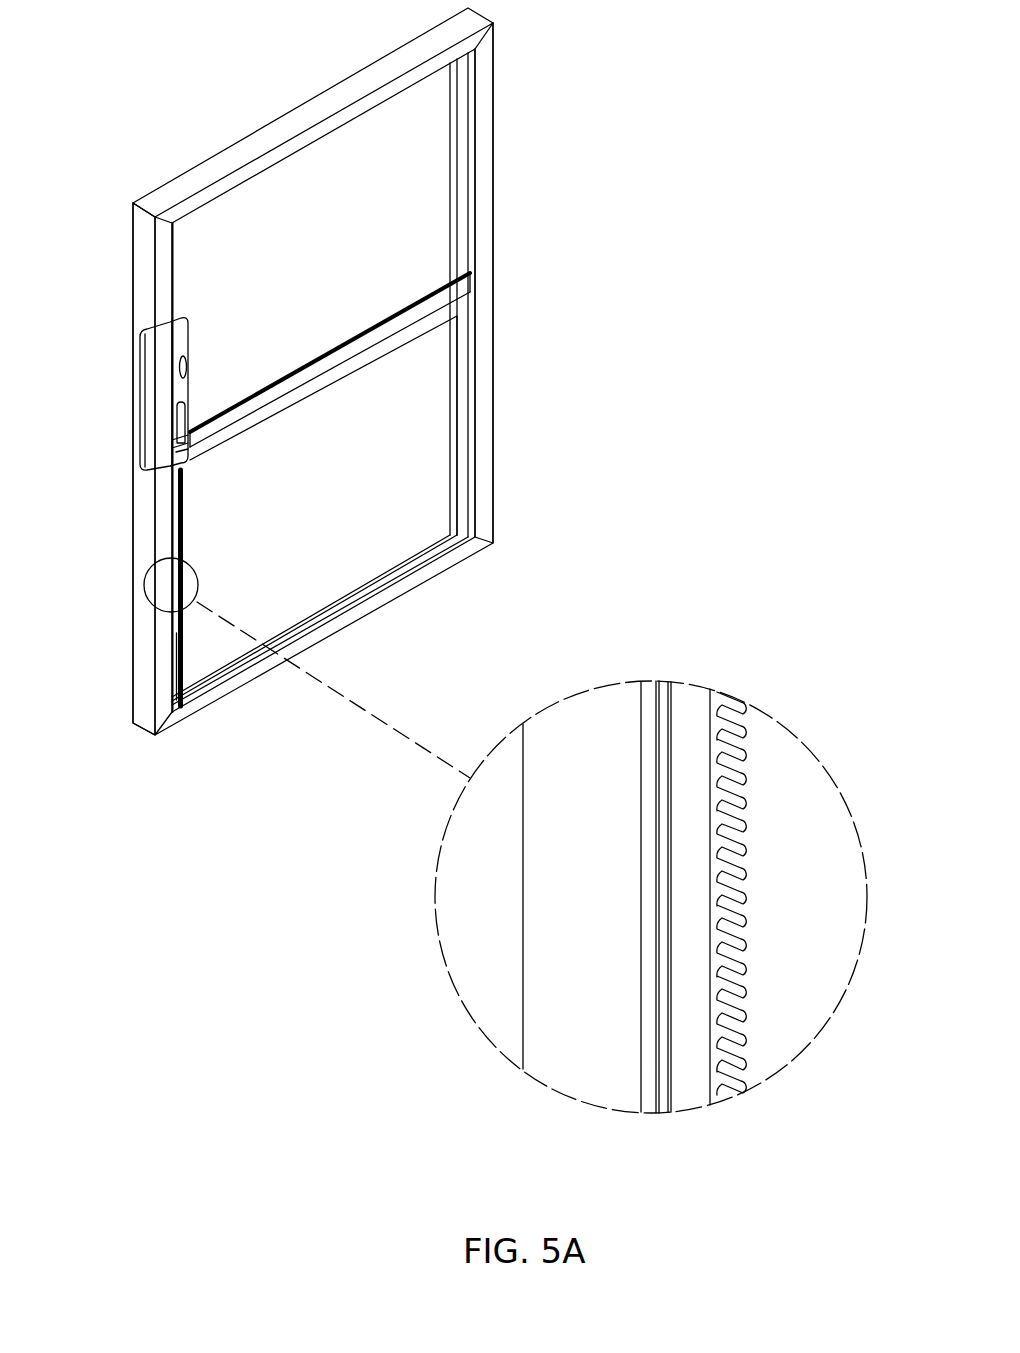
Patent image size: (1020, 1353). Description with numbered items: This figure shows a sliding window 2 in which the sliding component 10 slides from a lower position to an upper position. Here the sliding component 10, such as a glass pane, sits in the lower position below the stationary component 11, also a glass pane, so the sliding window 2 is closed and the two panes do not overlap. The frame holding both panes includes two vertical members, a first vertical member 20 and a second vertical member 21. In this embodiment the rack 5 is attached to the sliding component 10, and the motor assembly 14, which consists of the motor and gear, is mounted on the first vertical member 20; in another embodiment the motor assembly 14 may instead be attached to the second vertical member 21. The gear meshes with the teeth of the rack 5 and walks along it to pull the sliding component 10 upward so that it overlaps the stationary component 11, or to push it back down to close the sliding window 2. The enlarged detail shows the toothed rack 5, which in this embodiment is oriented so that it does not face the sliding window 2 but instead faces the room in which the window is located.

The sliding window 2 is at (381, 451).
The rack 5 is at (740, 813).
The sliding component 10 is at (370, 548).
The stationary component 11 is at (322, 188).
The motor assembly 14 is at (152, 320).
The first vertical member 20 is at (140, 660).
The second vertical member 21 is at (485, 455).